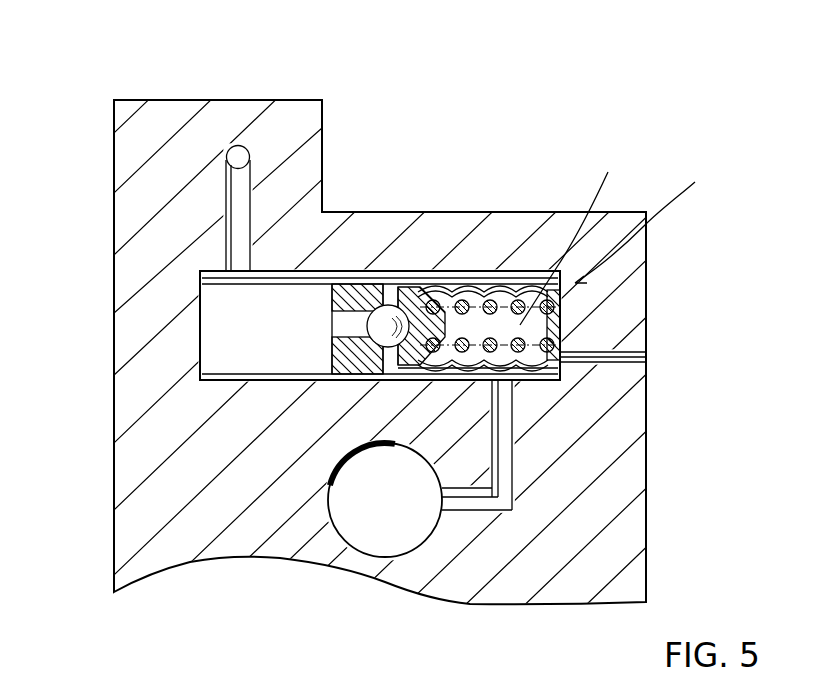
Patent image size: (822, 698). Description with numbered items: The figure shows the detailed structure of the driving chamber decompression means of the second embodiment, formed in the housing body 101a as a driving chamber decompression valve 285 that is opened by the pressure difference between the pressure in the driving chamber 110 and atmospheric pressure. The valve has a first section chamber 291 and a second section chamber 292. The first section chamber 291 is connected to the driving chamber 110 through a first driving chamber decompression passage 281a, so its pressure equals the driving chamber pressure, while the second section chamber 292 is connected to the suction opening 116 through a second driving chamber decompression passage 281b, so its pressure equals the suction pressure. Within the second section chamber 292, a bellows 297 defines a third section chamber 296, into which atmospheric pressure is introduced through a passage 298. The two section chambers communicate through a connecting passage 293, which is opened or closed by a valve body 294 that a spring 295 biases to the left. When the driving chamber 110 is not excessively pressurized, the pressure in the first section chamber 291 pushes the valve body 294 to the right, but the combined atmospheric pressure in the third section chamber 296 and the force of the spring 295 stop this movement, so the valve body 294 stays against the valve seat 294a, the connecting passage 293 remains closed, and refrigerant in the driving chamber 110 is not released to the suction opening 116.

The housing body 101a is at (314, 75).
The driving chamber 110 is at (134, 151).
The first driving chamber decompression passage 281a is at (240, 190).
The first section chamber 291 is at (200, 282).
The connecting passage 293 is at (330, 327).
The valve seat 294a is at (355, 292).
The valve body 294 is at (405, 300).
The spring 295 is at (462, 300).
The bellows 297 is at (522, 290).
The driving chamber decompression valve 285 is at (562, 292).
The passage 298 is at (587, 350).
The third section chamber 296 is at (520, 376).
The second section chamber 292 is at (477, 375).
The second driving chamber decompression passage 281b is at (513, 488).
The suction opening 116 is at (385, 534).